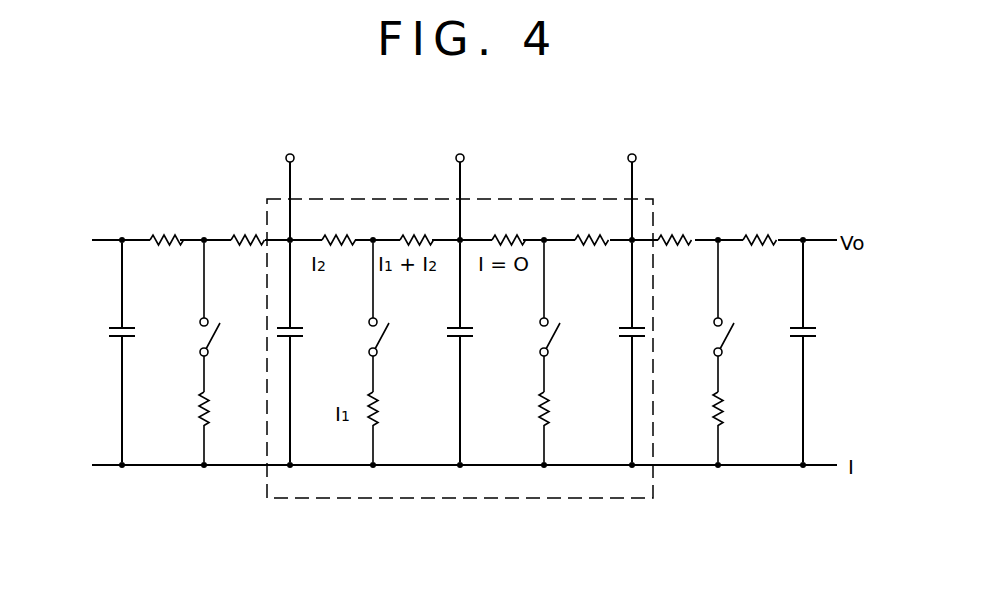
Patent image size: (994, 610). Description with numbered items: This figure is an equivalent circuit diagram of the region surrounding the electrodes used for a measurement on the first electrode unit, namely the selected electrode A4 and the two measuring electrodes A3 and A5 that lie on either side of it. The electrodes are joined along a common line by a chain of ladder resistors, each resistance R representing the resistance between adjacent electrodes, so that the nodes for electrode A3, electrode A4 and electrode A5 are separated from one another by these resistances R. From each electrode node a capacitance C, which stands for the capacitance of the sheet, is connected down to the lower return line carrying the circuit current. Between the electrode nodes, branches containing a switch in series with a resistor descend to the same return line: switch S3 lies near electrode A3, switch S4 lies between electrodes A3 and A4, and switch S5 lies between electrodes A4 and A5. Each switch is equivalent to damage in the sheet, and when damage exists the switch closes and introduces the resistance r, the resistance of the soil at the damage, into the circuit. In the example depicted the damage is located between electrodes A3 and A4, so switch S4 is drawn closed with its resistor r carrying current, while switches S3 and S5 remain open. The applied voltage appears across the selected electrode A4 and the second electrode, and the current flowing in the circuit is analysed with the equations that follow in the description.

The measuring electrode A3 is at (289, 181).
The selected electrode A4 is at (477, 181).
The measuring electrode A5 is at (631, 181).
The switch S3 is at (226, 306).
The switch S4 is at (388, 352).
The switch S5 is at (559, 352).
The resistance between adjacent electrodes R is at (465, 225).
The capacitance of the sheet C is at (461, 352).
The resistance of the soil in the damage r is at (381, 409).